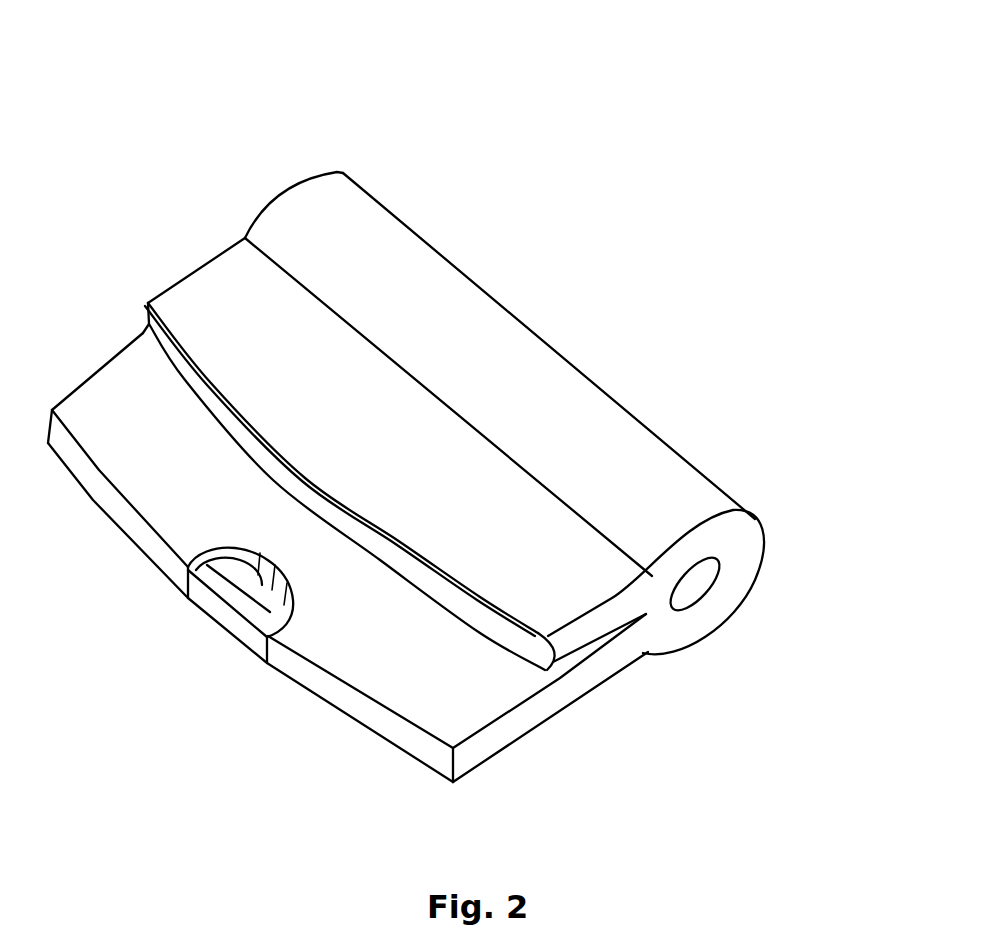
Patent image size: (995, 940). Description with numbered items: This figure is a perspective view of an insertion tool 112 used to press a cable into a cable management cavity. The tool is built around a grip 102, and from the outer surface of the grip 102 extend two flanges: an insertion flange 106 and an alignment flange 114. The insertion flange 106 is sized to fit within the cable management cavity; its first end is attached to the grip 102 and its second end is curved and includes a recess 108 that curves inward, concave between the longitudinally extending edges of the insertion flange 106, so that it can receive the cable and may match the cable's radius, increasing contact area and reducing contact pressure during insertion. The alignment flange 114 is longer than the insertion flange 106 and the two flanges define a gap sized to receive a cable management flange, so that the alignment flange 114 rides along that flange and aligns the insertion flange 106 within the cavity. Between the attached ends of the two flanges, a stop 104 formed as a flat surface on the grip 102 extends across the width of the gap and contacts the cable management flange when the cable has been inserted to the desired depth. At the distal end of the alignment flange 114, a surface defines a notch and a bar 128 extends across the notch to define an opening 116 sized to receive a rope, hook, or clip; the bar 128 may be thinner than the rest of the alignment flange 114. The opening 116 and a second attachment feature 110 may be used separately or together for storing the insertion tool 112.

The grip 102 is at (510, 327).
The stop 104 is at (643, 618).
The insertion flange 106 is at (222, 327).
The recess 108 is at (208, 373).
The attachment feature 110 is at (697, 588).
The insertion tool 112 is at (333, 160).
The alignment flange 114 is at (432, 707).
The opening 116 is at (258, 567).
The bar 128 is at (223, 615).